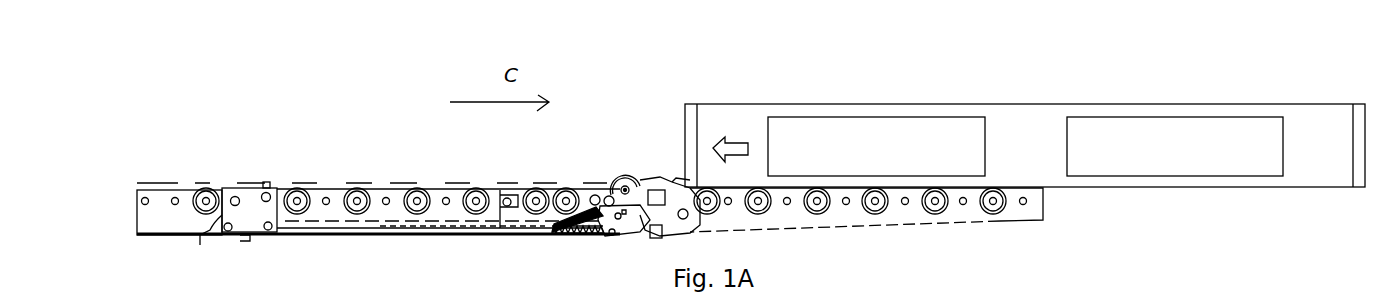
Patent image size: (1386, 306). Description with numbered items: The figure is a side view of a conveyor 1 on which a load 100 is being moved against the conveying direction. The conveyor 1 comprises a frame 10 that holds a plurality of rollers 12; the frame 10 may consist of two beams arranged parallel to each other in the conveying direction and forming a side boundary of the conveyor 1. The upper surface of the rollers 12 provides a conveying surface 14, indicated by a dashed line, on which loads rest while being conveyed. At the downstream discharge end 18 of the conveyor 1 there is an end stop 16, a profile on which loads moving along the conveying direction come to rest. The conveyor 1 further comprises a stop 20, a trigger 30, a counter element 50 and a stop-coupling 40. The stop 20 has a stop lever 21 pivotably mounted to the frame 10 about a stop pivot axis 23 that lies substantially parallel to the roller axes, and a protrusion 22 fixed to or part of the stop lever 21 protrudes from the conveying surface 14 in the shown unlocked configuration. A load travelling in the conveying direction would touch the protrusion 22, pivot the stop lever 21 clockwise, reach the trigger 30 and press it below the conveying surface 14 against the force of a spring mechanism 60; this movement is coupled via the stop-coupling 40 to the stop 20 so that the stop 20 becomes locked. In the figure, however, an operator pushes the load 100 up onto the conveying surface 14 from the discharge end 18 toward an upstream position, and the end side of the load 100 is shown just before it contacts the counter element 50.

The conveyor 1 is at (430, 266).
The frame 10 is at (163, 227).
The rollers 12 is at (206, 190).
The conveying surface 14 is at (464, 184).
The end stop 16 is at (1043, 200).
The discharge end 18 is at (945, 214).
The stop 20 is at (258, 223).
The stop lever 21 is at (245, 238).
The protrusion 22 is at (268, 183).
The stop pivot axis 23 is at (222, 227).
The trigger 30 is at (637, 187).
The stop-coupling 40 is at (470, 225).
The counter element 50 is at (677, 213).
The spring mechanism 60 is at (592, 230).
The load 100 is at (1017, 112).